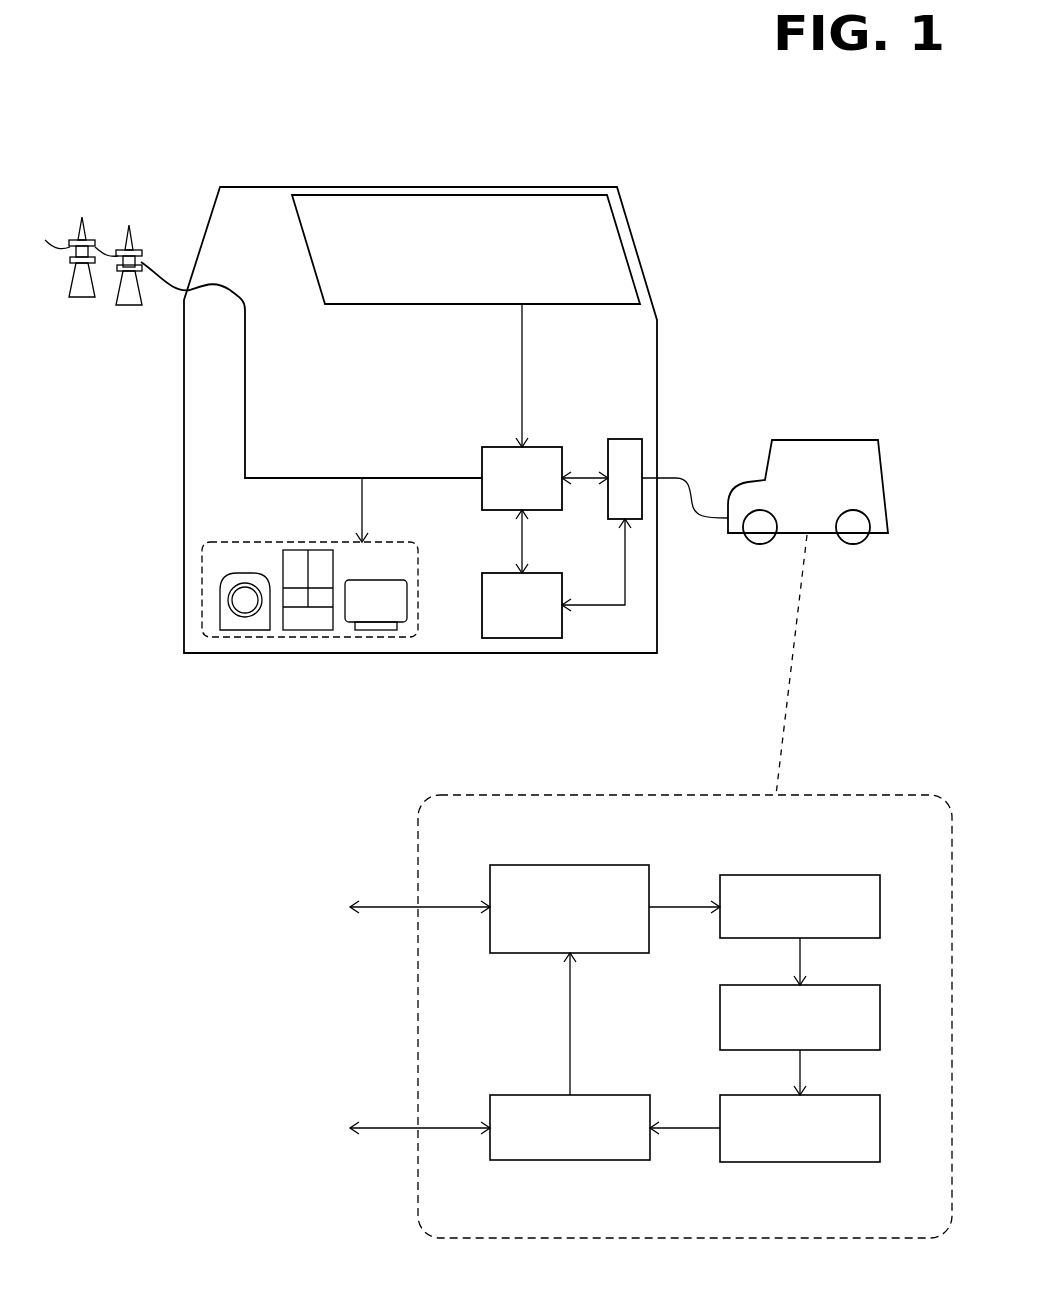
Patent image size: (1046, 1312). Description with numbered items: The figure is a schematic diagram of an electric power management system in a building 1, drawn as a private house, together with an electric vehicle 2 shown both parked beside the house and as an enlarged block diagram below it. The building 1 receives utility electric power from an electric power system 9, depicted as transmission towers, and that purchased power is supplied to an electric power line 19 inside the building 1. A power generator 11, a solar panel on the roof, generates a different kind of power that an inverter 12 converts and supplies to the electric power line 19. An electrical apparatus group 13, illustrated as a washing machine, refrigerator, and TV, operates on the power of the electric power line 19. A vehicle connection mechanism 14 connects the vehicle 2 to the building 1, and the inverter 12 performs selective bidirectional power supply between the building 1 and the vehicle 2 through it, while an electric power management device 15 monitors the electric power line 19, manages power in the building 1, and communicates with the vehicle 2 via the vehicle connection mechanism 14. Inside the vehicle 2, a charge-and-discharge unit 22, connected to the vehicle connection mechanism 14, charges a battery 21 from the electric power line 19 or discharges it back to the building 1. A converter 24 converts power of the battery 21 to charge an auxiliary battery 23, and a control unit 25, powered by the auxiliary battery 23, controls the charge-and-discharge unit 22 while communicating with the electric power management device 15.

The building 1 is at (255, 187).
The electric power system 9 is at (117, 200).
The power generator 11 is at (470, 195).
The inverter 12 is at (492, 447).
The electrical apparatus group 13 is at (202, 592).
The vehicle connection mechanism 14 is at (642, 455).
The electric power management device 15 is at (525, 643).
The electric power line 19 is at (318, 478).
The vehicle 2 is at (838, 440).
The battery 21 is at (797, 875).
The charge-and-discharge unit 22 is at (570, 865).
The auxiliary battery 23 is at (797, 1162).
The converter 24 is at (880, 1000).
The control unit 25 is at (570, 1160).